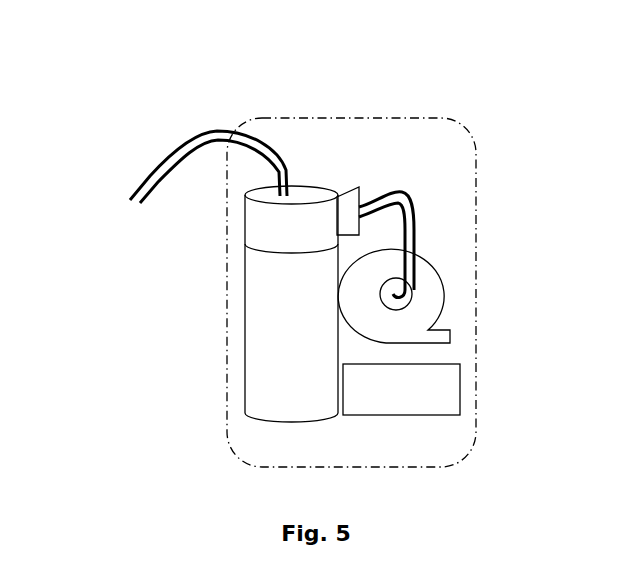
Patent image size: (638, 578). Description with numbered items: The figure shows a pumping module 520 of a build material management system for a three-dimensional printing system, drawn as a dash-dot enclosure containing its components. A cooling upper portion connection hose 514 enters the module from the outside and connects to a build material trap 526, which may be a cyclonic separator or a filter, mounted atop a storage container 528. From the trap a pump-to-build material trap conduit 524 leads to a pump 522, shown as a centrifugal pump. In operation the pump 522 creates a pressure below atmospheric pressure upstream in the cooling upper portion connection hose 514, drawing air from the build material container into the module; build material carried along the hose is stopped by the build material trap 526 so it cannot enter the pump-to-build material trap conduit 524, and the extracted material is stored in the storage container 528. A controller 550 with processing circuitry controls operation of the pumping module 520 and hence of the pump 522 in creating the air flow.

The pumping module 520 is at (240, 88).
The cooling upper portion connection hose 514 is at (212, 130).
The pump-to-build material trap conduit 524 is at (400, 188).
The build material trap 526 is at (291, 219).
The storage container 528 is at (291, 308).
The pump 522 is at (394, 296).
The controller 550 is at (401, 389).